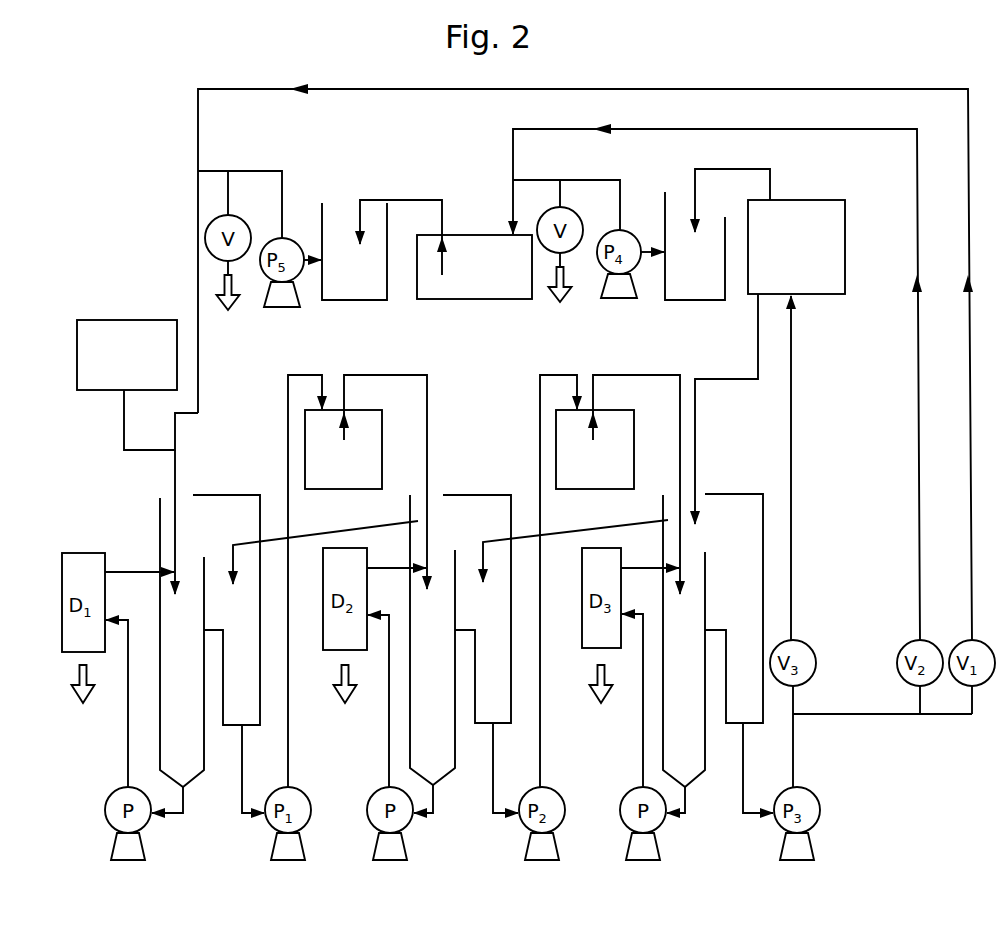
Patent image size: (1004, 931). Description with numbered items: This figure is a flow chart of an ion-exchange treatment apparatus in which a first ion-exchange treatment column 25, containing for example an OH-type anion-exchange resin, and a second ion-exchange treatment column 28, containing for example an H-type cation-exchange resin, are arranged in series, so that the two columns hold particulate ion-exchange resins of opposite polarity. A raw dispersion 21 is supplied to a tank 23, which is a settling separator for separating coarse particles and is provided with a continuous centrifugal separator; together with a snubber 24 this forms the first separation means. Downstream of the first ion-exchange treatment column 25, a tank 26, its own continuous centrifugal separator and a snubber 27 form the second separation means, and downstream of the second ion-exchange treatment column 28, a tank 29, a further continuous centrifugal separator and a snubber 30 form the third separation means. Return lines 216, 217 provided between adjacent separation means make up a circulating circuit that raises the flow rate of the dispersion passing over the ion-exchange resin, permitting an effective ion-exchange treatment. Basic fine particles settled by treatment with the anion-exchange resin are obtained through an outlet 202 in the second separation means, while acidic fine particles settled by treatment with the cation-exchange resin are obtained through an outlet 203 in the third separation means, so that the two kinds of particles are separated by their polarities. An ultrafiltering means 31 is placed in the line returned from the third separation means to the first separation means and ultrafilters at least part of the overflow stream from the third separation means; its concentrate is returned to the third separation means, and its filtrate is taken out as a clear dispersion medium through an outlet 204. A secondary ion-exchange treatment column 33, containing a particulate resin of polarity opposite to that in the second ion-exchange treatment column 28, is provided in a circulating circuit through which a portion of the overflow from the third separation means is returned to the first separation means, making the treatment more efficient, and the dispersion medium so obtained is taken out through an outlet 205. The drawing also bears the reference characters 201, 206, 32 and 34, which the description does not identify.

The raw dispersion 21 is at (110, 365).
The tank 23 is at (170, 731).
The snubber 24 is at (229, 681).
The first ion-exchange treatment column 25 is at (331, 467).
The tank 26 is at (420, 731).
The snubber 27 is at (480, 681).
The second ion-exchange treatment column 28 is at (582, 467).
The tank 29 is at (672, 731).
The snubber 30 is at (733, 681).
The ultrafiltering means 31 is at (785, 260).
The wash liquid tank 32 is at (683, 281).
The secondary ion-exchange treatment column 33 is at (456, 281).
The recovery tank 34 is at (340, 281).
The outlet of first separator 201 is at (83, 702).
The outlet 202 is at (345, 702).
The outlet 203 is at (601, 702).
The outlet 204 is at (732, 200).
The outlet 205 is at (228, 309).
The supply line 206 is at (726, 409).
The return line 216 is at (325, 544).
The return line 217 is at (575, 543).